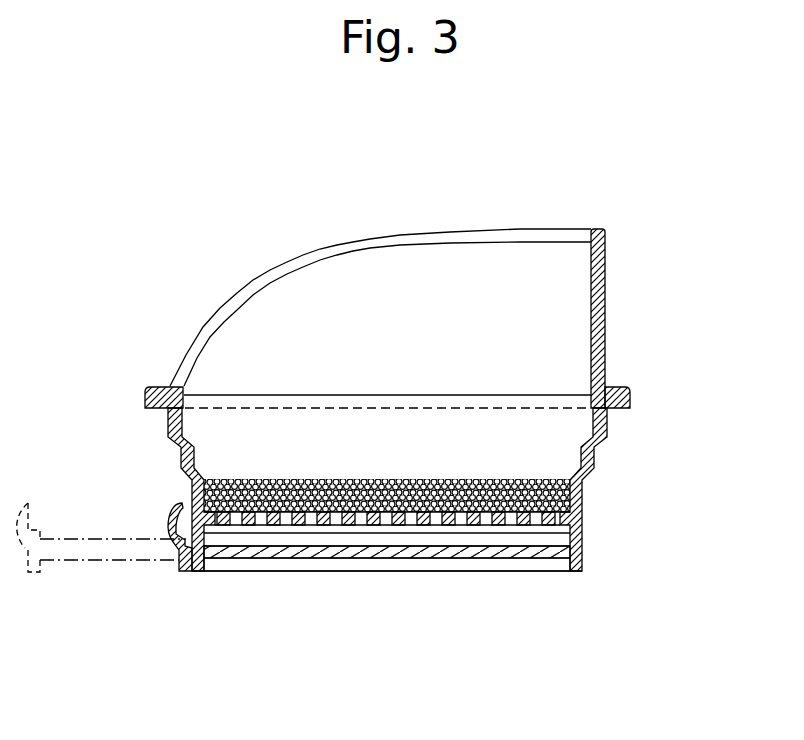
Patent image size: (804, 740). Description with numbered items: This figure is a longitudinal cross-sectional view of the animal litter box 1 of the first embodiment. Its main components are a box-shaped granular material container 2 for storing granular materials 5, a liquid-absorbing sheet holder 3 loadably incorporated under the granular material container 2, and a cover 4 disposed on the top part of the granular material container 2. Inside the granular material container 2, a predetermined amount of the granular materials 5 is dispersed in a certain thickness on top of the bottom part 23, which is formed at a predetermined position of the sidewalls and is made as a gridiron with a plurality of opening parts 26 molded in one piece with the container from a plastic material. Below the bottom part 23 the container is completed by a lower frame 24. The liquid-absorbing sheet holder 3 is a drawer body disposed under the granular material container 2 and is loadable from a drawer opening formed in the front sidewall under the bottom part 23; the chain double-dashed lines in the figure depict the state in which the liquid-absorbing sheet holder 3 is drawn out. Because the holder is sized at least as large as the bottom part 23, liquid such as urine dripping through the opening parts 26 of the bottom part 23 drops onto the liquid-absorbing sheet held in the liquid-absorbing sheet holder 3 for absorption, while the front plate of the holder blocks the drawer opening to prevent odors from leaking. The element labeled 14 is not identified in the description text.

The animal litter box 1 is at (423, 203).
The granular material container 2 is at (608, 458).
The liquid-absorbing sheet holder 3 is at (160, 515).
The cover 4 is at (607, 300).
The granular materials 5 is at (583, 512).
The hatched plate layer 14 is at (283, 553).
The bottom part 23 is at (543, 527).
The lower frame 24 is at (370, 565).
The opening parts 26 is at (485, 518).